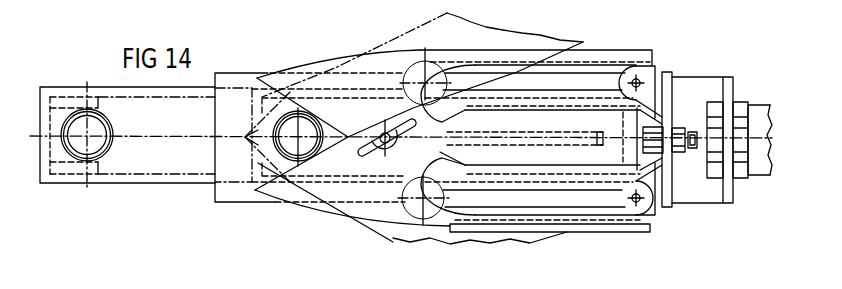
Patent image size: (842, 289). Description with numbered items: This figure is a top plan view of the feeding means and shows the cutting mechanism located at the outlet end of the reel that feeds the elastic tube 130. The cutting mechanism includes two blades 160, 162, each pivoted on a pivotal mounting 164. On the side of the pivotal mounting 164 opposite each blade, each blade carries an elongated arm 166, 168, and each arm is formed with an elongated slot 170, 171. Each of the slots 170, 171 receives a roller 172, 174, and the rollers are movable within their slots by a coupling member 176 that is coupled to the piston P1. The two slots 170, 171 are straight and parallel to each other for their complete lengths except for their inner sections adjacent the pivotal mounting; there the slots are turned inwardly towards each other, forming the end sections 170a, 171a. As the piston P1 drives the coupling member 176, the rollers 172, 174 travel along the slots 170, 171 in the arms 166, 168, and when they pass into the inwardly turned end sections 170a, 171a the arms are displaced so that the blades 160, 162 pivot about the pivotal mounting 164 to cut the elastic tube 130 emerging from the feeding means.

The elastic tube 130 is at (281, 108).
The blade 160 is at (273, 78).
The blade 162 is at (312, 203).
The pivotal mounting 164 is at (381, 126).
The elongated arm 166 is at (600, 53).
The elongated arm 168 is at (593, 224).
The elongated slot 170 is at (528, 78).
The end section 170a is at (408, 70).
The elongated slot 171 is at (543, 208).
The end section 171a is at (452, 213).
The roller 172 is at (653, 72).
The roller 174 is at (650, 212).
The coupling member 176 is at (675, 85).
The piston P1 is at (760, 167).